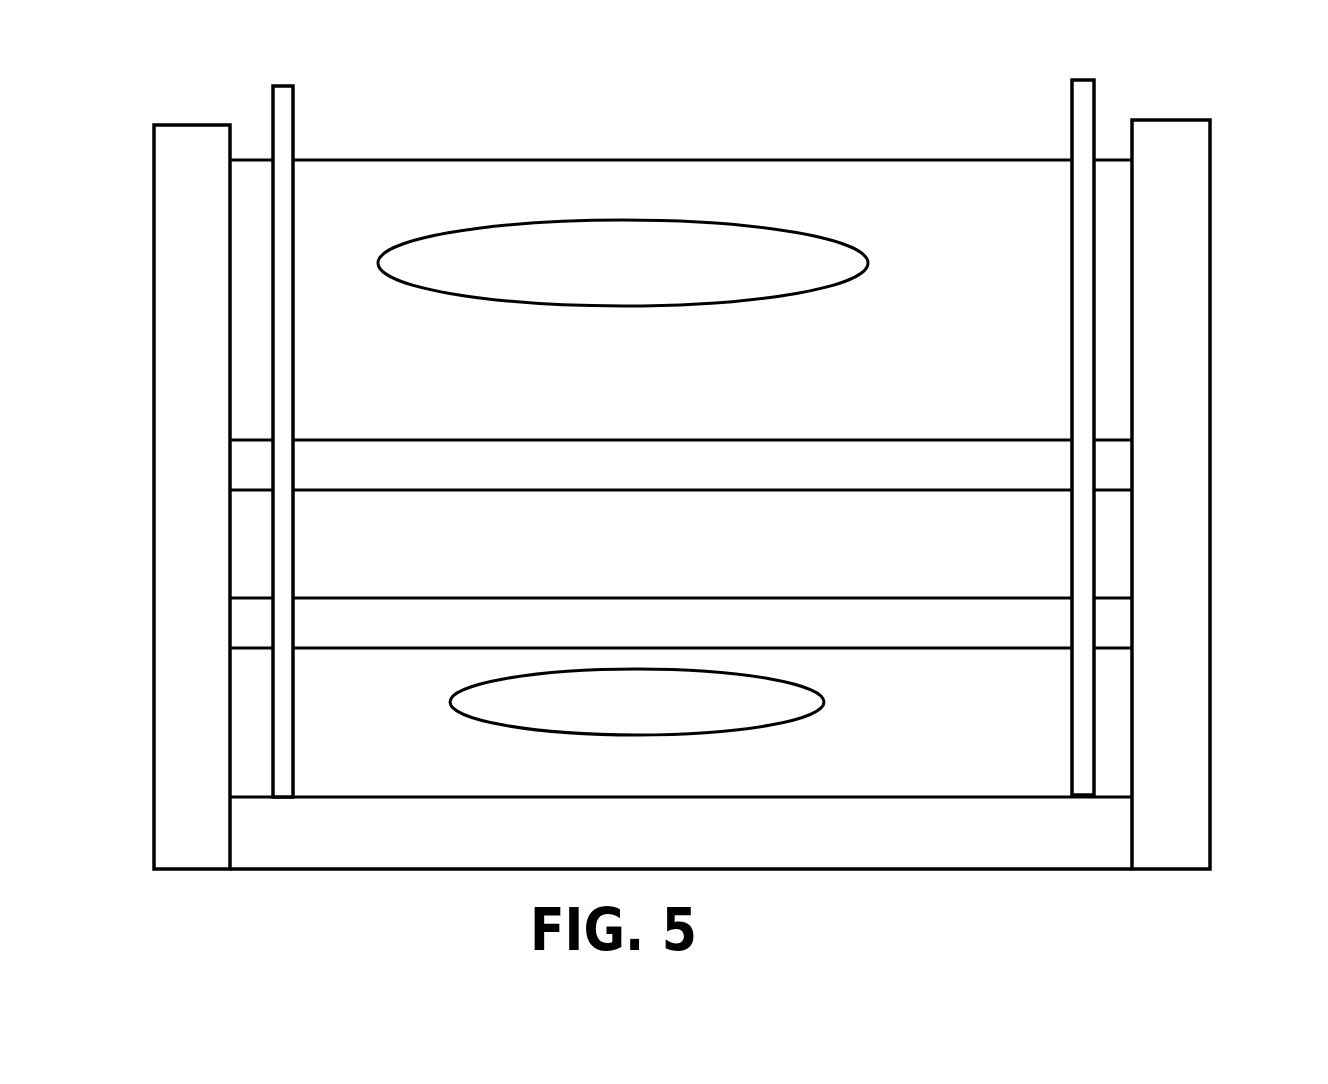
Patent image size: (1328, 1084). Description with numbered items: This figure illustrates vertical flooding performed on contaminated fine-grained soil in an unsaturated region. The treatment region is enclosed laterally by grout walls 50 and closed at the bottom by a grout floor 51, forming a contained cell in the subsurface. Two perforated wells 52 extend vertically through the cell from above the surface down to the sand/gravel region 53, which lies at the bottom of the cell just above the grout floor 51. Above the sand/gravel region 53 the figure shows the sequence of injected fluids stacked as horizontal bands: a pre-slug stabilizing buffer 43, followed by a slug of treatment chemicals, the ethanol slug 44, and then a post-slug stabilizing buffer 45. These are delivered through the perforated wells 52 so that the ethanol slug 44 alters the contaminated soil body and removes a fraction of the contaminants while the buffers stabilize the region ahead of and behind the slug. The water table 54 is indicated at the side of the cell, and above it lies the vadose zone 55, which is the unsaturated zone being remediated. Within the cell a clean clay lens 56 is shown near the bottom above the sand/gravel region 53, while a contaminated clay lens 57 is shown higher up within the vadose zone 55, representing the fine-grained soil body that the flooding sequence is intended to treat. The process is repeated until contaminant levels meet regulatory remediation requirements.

The pre-slug stabilizing buffer 43 is at (413, 481).
The ethanol slug 44 is at (440, 556).
The post-slug stabilizing buffer 45 is at (392, 640).
The grout walls 50 is at (689, 462).
The grout floor 51 is at (698, 897).
The perforated wells 52 is at (683, 433).
The sand/gravel region 53 is at (398, 786).
The water table 54 is at (1110, 646).
The vadose zone 55 is at (470, 377).
The clean clay lens 56 is at (682, 696).
The contaminated clay lens 57 is at (643, 249).